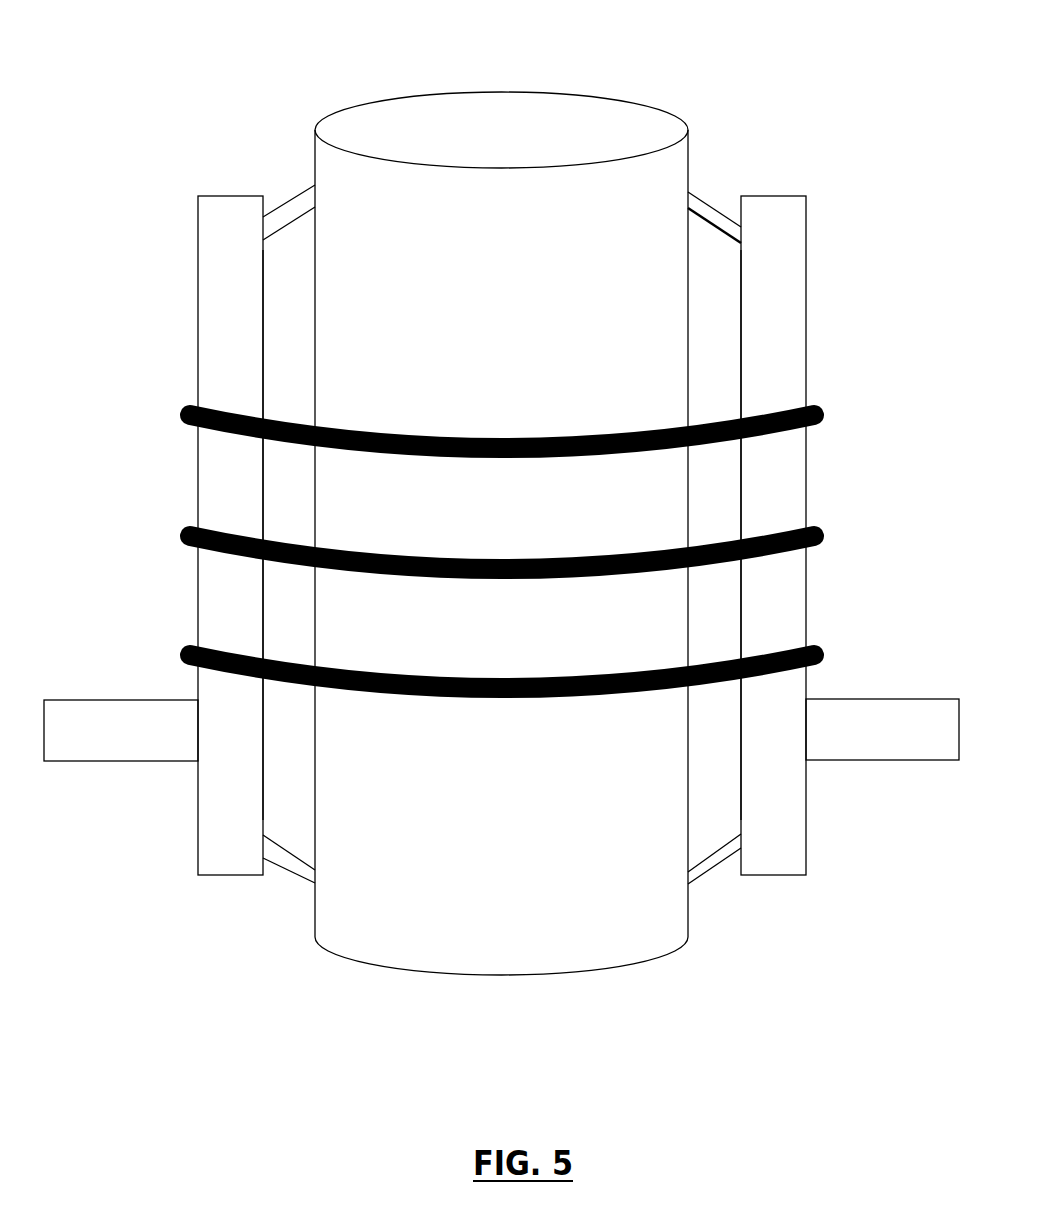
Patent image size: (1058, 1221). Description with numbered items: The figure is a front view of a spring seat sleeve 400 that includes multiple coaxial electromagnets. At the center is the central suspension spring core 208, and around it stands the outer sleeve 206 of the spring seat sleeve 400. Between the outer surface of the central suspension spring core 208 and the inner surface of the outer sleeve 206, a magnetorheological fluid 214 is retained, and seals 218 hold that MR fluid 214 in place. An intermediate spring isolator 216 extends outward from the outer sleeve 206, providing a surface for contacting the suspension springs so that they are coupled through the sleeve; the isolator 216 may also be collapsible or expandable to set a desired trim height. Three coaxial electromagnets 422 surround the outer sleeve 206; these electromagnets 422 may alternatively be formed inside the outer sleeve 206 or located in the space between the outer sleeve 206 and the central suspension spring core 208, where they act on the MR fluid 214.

The spring seat sleeve 400 is at (790, 52).
The central suspension spring core 208 is at (413, 96).
The outer sleeve 206 is at (198, 483).
The magnetorheological fluid 214 is at (283, 317).
The intermediate spring isolator 216 is at (852, 699).
The seal 218 is at (294, 194).
The coaxial electromagnet 422 is at (818, 412).